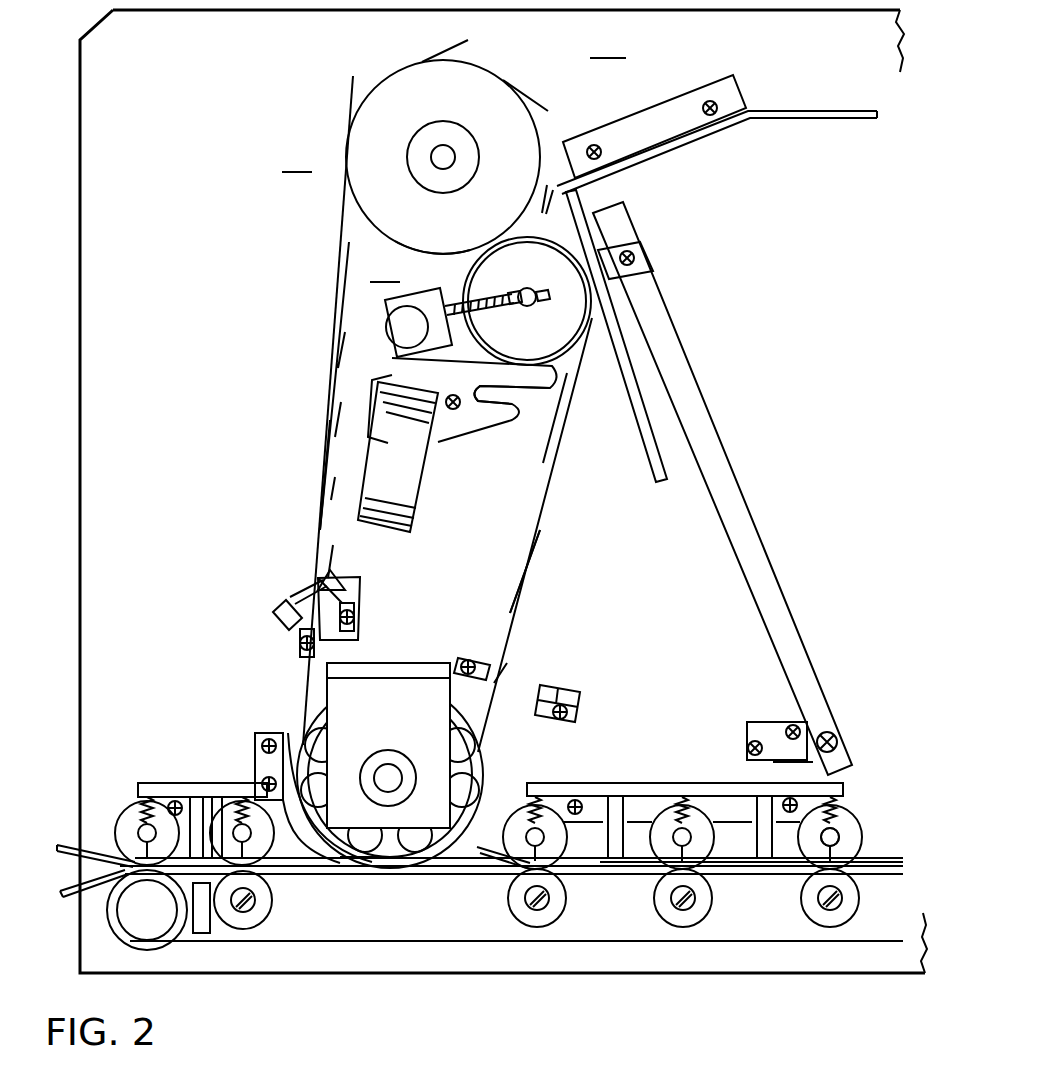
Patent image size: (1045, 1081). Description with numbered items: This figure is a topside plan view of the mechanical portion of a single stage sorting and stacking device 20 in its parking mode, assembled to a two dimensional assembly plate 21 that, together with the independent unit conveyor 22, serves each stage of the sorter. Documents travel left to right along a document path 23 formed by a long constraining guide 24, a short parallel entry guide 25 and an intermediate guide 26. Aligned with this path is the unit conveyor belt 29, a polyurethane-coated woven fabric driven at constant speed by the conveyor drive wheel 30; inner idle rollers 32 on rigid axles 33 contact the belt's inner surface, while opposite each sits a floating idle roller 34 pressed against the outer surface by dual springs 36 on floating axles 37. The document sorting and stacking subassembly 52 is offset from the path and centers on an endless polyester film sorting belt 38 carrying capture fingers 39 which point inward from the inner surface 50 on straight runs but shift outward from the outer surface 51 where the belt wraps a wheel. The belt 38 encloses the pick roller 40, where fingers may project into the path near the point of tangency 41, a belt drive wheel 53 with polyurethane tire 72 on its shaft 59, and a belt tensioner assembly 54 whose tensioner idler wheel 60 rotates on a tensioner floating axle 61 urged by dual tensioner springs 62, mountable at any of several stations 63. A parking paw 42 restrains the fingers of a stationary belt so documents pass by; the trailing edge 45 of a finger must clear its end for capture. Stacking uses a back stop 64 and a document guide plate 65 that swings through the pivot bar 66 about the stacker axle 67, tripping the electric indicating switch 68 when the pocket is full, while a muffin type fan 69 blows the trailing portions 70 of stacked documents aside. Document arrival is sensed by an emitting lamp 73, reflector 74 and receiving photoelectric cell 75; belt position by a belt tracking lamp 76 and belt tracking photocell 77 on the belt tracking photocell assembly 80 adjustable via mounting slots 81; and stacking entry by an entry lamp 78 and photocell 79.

The single stage sorting and stacking device 20 is at (608, 45).
The assembly plate 21 is at (84, 592).
The unit conveyor 22 is at (462, 941).
The document path 23 is at (75, 882).
The long constraining guide 24 is at (358, 875).
The short parallel entry guide 25 is at (288, 871).
The intermediate guide 26 is at (903, 862).
The unit conveyor belt 29 is at (764, 941).
The conveyor drive wheel 30 is at (144, 922).
The idle roller 32 is at (556, 906).
The rigid axle 33 is at (803, 899).
The floating idle roller 34 is at (132, 816).
The dual springs 36 is at (842, 808).
The floating axle 37 is at (838, 832).
The sorting belt 38 is at (336, 318).
The capture finger 39 is at (433, 58).
The pick roller 40 is at (465, 768).
The point of tangency 41 is at (390, 878).
The parking paw 42 is at (262, 745).
The trailing edge 45 is at (353, 82).
The inner surface 50 is at (535, 537).
The outer surface 51 is at (322, 420).
The document sorting and stacking subassembly 52 is at (296, 159).
The belt drive wheel 53 is at (488, 97).
The belt tensioner assembly 54 is at (384, 269).
The shaft 59 is at (431, 157).
The tensioner idler wheel 60 is at (558, 350).
The tensioner floating axle 61 is at (529, 289).
The dual tensioner springs 62 is at (496, 320).
The station 63 is at (520, 434).
The back stop 64 is at (875, 118).
The document guide plate 65 is at (658, 476).
The pivot bar 66 is at (752, 513).
The stacker axle 67 is at (833, 740).
The electric indicating switch 68 is at (752, 721).
The muffin type fan 69 is at (412, 533).
The trailing portion 70 is at (628, 376).
The polyurethane tire 72 is at (395, 241).
The emitting lamp 73 is at (217, 800).
The reflector 74 is at (210, 934).
The receiving photoelectric cell 75 is at (196, 800).
The belt tracking lamp 76 is at (340, 579).
The belt tracking photocell 77 is at (282, 604).
The entry lamp 78 is at (580, 689).
The photocell 79 is at (483, 660).
The belt tracking photocell assembly 80 is at (362, 600).
The mounting slots 81 is at (356, 640).